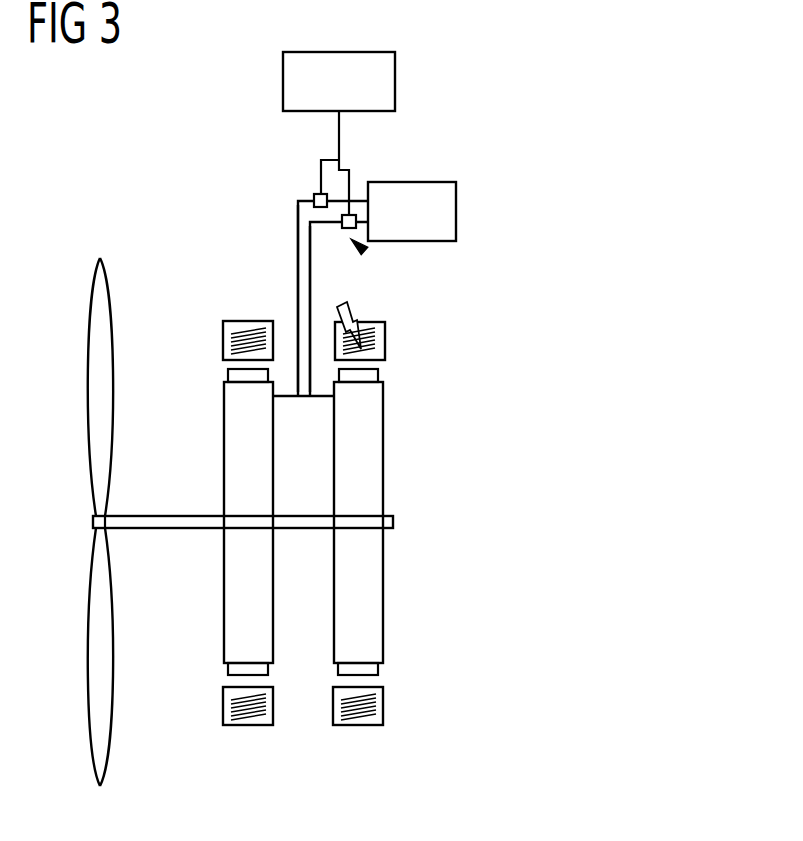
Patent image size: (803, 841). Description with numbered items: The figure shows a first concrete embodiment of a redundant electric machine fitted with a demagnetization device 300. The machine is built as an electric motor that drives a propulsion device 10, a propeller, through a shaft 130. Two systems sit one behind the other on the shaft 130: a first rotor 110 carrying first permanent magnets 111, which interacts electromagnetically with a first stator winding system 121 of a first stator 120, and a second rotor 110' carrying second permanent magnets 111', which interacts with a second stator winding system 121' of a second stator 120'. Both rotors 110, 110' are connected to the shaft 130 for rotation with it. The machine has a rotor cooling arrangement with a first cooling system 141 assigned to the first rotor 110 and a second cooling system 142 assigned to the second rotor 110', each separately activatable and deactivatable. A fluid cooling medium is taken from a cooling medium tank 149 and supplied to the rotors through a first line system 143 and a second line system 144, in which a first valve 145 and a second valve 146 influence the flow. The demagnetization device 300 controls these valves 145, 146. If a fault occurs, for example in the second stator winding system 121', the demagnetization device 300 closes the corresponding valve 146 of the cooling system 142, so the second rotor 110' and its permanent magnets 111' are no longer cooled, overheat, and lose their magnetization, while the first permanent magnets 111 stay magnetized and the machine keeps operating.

The propulsion device 10 is at (93, 645).
The first rotor 110 is at (211, 522).
The second rotor 110' is at (396, 522).
The first permanent magnets 111 is at (211, 522).
The second permanent magnets 111' is at (397, 522).
The first stator 120 is at (211, 533).
The second stator 120' is at (400, 548).
The first stator winding system 121 is at (194, 511).
The second stator winding system 121' is at (425, 523).
The shaft 130 is at (394, 522).
The first cooling system 141 is at (270, 183).
The second cooling system 142 is at (367, 253).
The first line system 143 is at (298, 243).
The second line system 144 is at (309, 287).
The first valve 145 is at (314, 196).
The second valve 146 is at (351, 213).
The cooling medium tank 149 is at (456, 212).
The demagnetization device 300 is at (395, 82).